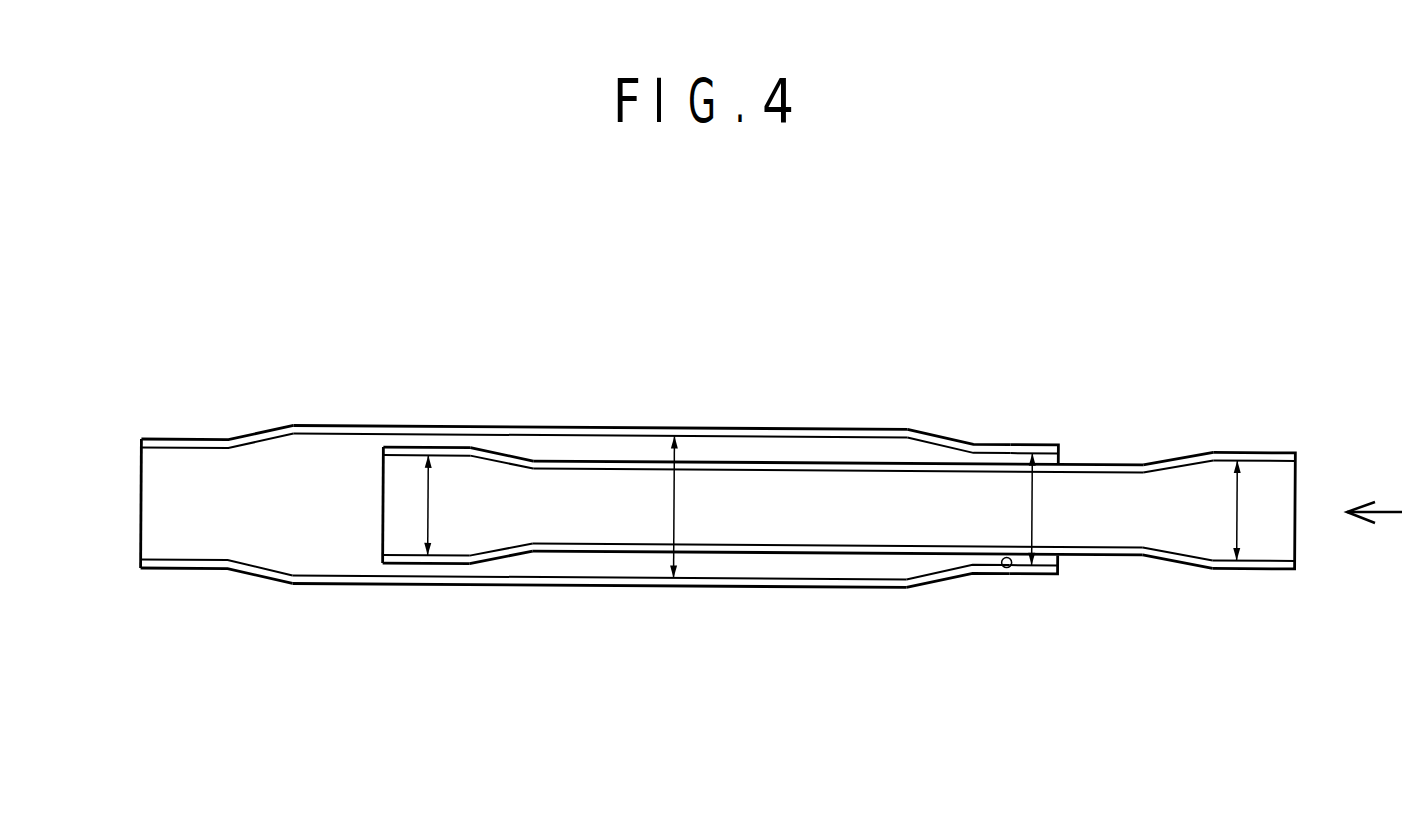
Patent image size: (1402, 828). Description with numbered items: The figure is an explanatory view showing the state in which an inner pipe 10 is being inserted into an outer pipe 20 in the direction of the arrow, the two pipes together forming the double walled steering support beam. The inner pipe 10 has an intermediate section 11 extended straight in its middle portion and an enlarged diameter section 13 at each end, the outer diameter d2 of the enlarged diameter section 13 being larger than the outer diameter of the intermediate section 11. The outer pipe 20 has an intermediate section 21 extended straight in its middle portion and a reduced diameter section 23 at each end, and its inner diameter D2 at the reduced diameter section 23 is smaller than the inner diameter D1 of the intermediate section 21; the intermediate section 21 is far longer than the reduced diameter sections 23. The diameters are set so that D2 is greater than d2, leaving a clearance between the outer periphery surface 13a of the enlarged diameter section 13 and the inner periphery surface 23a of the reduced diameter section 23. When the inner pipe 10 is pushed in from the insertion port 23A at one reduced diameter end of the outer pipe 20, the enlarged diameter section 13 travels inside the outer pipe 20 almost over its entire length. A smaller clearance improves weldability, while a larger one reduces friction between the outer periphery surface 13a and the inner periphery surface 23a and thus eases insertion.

The inner pipe 10 is at (836, 524).
The intermediate section 11 is at (808, 460).
The enlarged diameter section 13 is at (397, 446).
The outer periphery surface 13a is at (445, 446).
The outer pipe 20 is at (638, 505).
The intermediate section 21 is at (722, 427).
The reduced diameter section 23 is at (187, 438).
The insertion port 23A is at (1063, 457).
The inner periphery surface 23a is at (1007, 568).
The outer diameter of enlarged diameter section d2 is at (853, 507).
The inner diameter of intermediate section D1 is at (696, 507).
The inner diameter of reduced diameter section D2 is at (1056, 509).